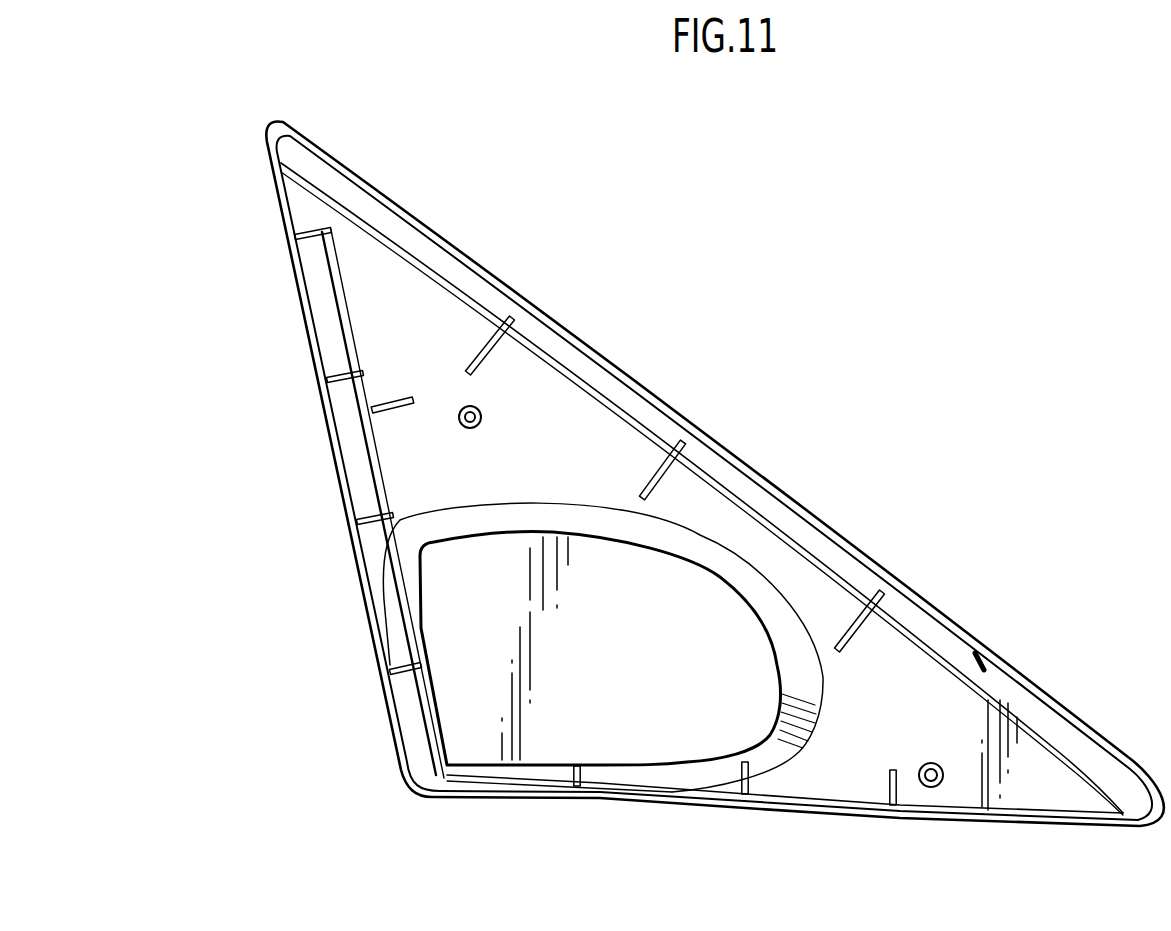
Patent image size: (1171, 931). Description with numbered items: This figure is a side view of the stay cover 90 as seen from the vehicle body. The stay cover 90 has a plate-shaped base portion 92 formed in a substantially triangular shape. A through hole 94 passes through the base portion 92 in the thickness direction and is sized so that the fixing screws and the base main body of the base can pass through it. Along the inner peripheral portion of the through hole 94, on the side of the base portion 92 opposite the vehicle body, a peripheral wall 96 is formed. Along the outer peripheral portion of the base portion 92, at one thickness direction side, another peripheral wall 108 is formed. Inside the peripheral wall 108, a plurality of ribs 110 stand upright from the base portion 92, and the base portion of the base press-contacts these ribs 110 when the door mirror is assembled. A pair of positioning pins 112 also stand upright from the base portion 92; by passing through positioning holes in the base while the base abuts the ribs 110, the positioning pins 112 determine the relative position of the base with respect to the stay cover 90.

The stay cover 90 is at (742, 316).
The base portion 92 is at (722, 515).
The through hole 94 is at (747, 562).
The peripheral wall 96 is at (780, 623).
The peripheral wall 108 is at (979, 655).
The ribs 110 is at (312, 240).
The positioning pins 112 is at (483, 419).